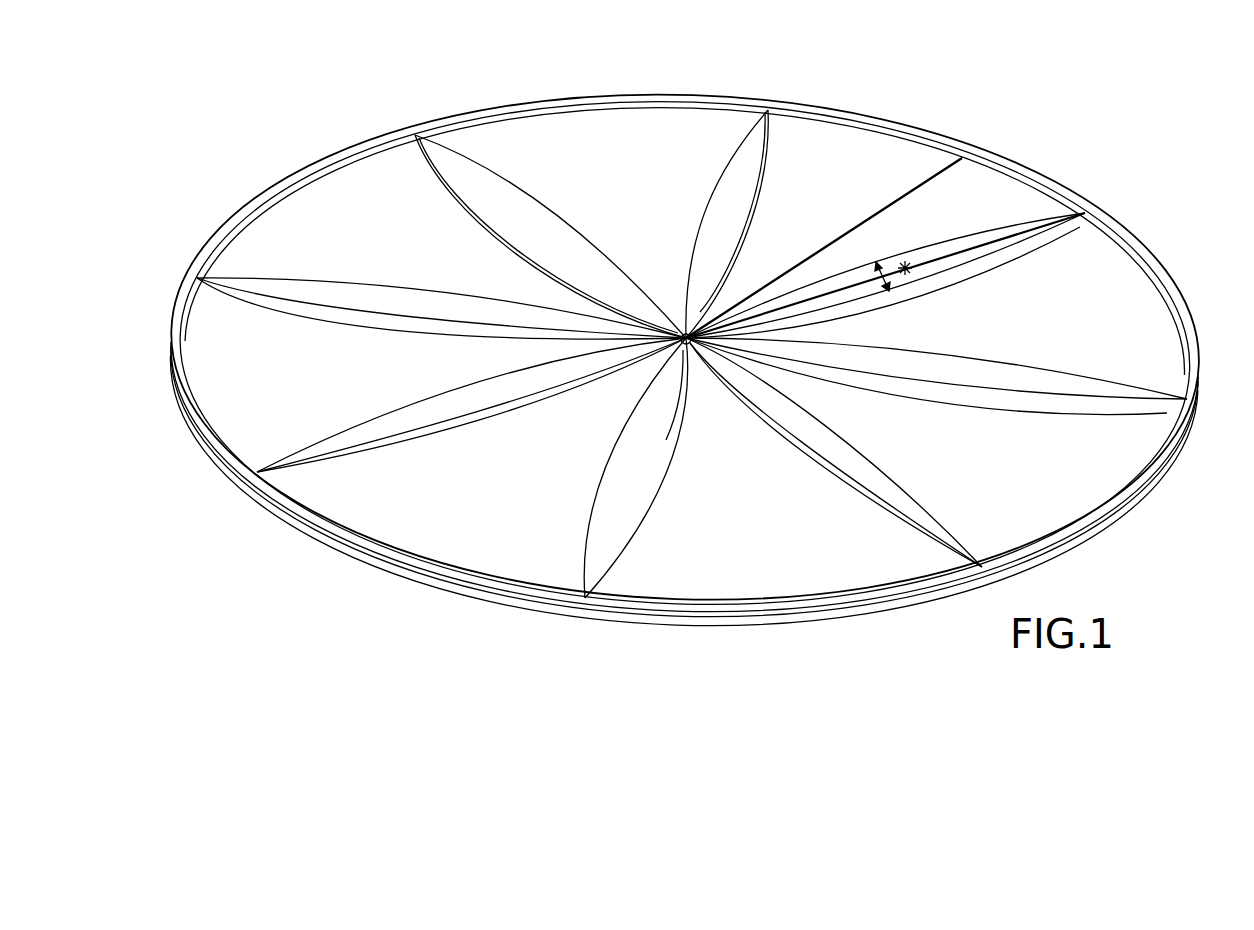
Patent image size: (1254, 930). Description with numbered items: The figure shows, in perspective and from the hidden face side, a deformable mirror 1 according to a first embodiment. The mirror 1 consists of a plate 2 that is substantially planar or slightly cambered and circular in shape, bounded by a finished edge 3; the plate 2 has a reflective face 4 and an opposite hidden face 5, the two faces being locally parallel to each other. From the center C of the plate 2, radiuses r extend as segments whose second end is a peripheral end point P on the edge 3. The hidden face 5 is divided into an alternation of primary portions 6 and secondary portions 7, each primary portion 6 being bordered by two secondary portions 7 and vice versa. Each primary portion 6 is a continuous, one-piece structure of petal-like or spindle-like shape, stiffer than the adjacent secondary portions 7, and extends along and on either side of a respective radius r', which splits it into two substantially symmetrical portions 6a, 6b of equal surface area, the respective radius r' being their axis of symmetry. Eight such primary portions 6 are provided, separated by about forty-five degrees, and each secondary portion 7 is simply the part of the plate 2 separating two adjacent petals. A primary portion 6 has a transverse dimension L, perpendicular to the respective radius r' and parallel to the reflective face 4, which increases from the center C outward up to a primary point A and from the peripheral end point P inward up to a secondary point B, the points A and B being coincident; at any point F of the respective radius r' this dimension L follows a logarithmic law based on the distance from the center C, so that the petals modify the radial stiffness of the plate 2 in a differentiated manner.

The deformable mirror 1 is at (214, 107).
The plate 2 is at (574, 128).
The finished edge 3 is at (873, 606).
The reflective face 4 is at (806, 632).
The hidden face 5 is at (648, 201).
The primary portion 6 is at (472, 152).
The first portion of primary portion 6a is at (1015, 243).
The second portion of primary portion 6b is at (982, 200).
The secondary portion 7 is at (362, 183).
The center C is at (690, 350).
The peripheral end point P is at (1088, 212).
The radius r is at (897, 144).
The respective radius r' is at (957, 221).
The primary point A is at (904, 264).
The secondary point B is at (908, 290).
The point F is at (876, 264).
The transverse dimension L is at (880, 294).